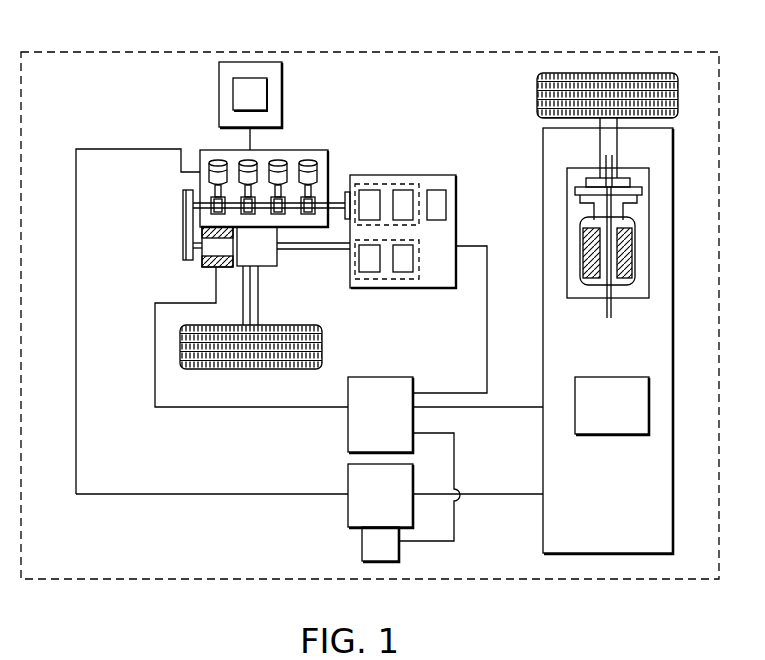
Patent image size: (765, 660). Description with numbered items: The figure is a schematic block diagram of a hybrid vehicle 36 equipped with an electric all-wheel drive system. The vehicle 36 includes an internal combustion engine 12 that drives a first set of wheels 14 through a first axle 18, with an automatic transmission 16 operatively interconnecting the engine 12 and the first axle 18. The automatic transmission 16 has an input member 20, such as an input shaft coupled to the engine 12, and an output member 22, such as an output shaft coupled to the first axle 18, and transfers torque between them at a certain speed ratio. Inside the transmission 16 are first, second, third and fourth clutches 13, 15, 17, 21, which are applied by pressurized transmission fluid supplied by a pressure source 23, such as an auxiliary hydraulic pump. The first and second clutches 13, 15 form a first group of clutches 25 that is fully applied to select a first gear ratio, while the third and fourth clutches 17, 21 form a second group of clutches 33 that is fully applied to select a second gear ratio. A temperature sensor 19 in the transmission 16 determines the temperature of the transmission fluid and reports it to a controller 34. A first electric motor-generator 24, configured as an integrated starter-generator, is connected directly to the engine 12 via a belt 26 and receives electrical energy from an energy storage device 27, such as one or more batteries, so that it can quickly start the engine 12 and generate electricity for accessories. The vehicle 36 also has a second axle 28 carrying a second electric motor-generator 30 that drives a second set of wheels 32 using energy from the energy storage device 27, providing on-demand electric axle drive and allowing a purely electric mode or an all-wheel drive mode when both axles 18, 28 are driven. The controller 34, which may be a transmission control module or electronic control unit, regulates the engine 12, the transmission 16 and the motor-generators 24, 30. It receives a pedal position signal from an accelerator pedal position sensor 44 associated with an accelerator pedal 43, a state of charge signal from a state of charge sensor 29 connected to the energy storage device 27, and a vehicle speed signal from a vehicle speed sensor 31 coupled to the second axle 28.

The internal combustion engine 12 is at (296, 140).
The first clutch 13 is at (398, 190).
The first set of wheels 14 is at (250, 369).
The second clutch 15 is at (421, 165).
The automatic transmission 16 is at (436, 214).
The third clutch 17 is at (370, 272).
The first axle 18 is at (262, 268).
The temperature sensor 19 is at (446, 205).
The input member 20 is at (347, 192).
The fourth clutch 21 is at (413, 262).
The output member 22 is at (295, 252).
The pressure source 23 is at (369, 190).
The first electric motor-generator 24 is at (212, 270).
The first group of clutches 25 is at (421, 167).
The belt 26 is at (182, 222).
The energy storage device 27 is at (393, 505).
The second axle 28 is at (621, 317).
The state of charge sensor 29 is at (393, 554).
The second electric motor-generator 30 is at (649, 235).
The vehicle speed sensor 31 is at (625, 415).
The second set of wheels 32 is at (609, 73).
The second group of clutches 33 is at (407, 278).
The controller 34 is at (393, 425).
The hybrid vehicle 36 is at (221, 579).
The accelerator pedal 43 is at (230, 95).
The accelerator pedal position sensor 44 is at (263, 104).